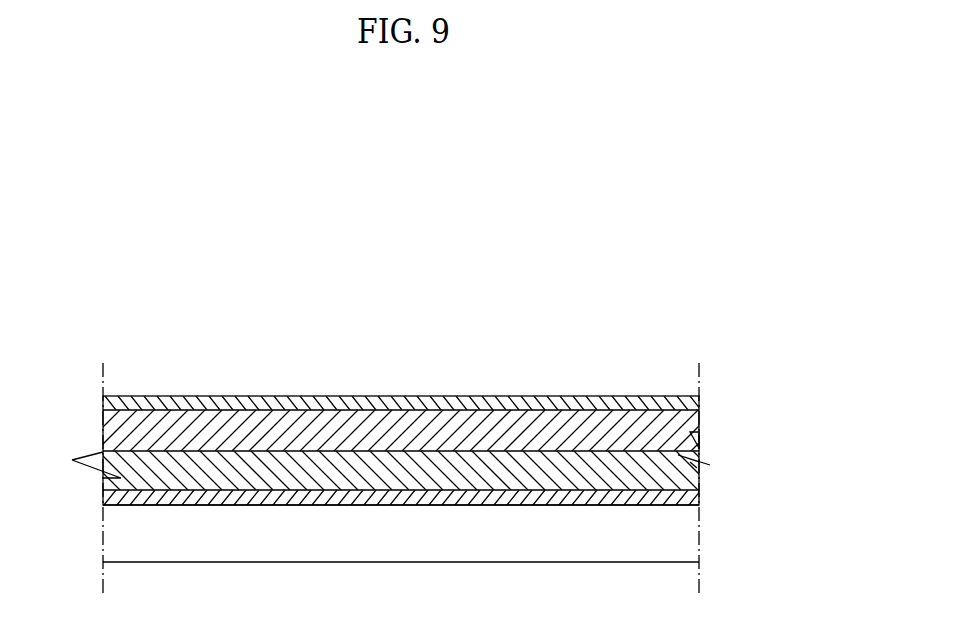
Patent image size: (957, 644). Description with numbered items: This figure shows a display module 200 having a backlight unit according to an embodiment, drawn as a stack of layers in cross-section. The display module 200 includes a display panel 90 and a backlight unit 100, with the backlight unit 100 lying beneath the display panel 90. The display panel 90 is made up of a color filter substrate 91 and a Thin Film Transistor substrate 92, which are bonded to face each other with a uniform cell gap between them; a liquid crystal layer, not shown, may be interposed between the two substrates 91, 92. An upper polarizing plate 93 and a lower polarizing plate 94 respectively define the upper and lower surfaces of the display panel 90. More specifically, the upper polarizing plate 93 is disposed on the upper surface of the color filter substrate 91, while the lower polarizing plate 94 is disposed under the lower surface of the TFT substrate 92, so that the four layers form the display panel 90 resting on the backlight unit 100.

The display module 200 is at (135, 298).
The backlight unit 100 is at (688, 537).
The display panel 90 is at (72, 396).
The upper polarizing plate 93 is at (699, 399).
The color filter substrate 91 is at (688, 431).
The Thin Film Transistor (TFT) substrate 92 is at (693, 463).
The lower polarizing plate 94 is at (699, 494).